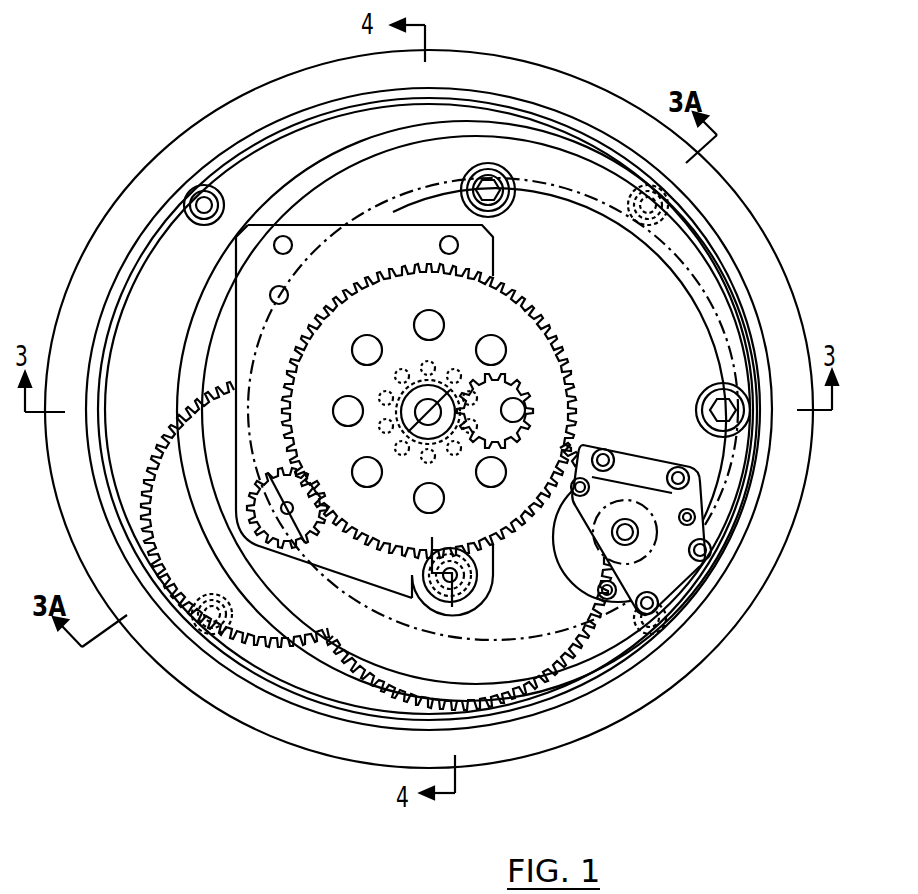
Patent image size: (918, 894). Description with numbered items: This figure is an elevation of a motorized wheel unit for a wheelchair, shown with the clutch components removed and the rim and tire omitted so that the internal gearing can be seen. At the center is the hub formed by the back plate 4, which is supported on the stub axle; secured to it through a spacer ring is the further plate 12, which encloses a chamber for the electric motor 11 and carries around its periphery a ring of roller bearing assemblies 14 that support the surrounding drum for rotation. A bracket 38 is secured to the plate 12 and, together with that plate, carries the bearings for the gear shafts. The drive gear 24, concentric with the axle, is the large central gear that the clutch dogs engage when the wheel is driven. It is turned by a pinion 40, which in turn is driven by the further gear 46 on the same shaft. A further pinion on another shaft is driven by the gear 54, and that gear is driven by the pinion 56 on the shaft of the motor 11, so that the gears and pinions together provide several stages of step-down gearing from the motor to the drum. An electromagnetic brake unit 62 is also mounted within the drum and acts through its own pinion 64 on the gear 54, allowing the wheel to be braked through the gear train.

The back plate 4 is at (180, 257).
The motor 11 is at (593, 213).
The further plate 12 is at (318, 164).
The peripheral roller bearing assemblies 14 is at (203, 185).
The drive gear 24 is at (560, 335).
The bracket 38 is at (335, 252).
The pinion 40 is at (290, 513).
The further gear 46 is at (283, 645).
The gear 54 is at (395, 715).
The pinion 56 is at (537, 393).
The electromagnetic brake unit 62 is at (700, 540).
The pinion 64 is at (708, 592).